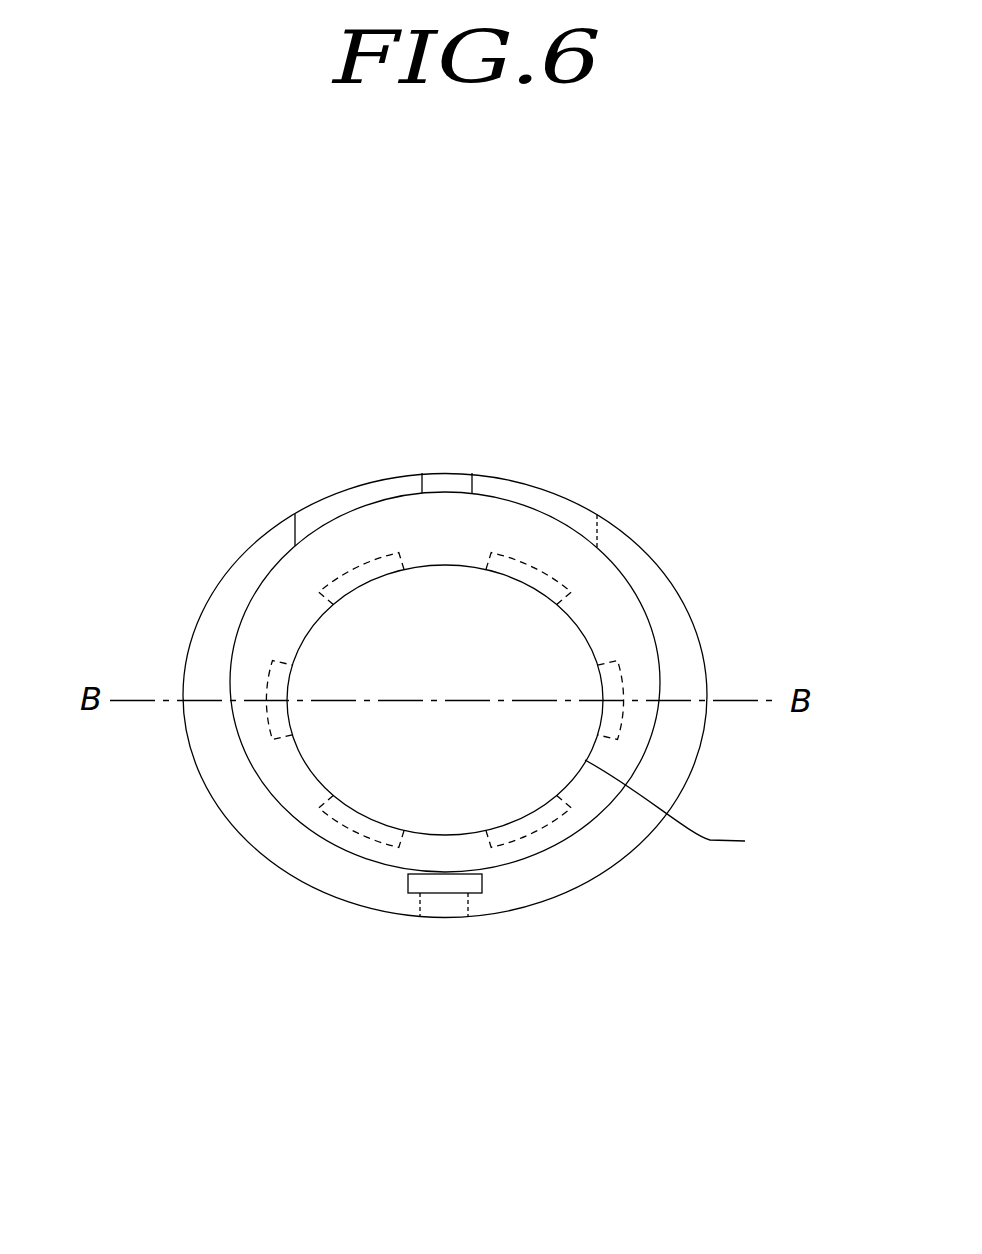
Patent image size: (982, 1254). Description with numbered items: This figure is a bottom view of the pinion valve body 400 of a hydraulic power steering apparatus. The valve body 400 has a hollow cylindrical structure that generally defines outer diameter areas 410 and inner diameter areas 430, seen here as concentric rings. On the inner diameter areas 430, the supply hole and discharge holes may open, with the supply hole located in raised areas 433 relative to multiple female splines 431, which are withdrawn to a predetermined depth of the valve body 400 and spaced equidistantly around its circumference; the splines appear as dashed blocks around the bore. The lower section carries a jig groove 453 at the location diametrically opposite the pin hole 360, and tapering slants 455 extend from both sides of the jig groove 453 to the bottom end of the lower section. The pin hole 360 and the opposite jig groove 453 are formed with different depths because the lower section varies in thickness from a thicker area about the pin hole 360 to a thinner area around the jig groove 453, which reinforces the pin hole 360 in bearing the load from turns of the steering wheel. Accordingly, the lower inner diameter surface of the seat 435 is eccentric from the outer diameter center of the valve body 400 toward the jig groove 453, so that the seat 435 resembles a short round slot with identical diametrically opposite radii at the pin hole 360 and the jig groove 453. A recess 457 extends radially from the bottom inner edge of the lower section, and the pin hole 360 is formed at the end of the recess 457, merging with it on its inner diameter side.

The pin hole 360 is at (433, 913).
The pinion valve body 400 is at (277, 422).
The outer diameter areas 410 is at (698, 643).
The inner diameter areas 430 is at (723, 397).
The female splines 431 is at (540, 563).
The raised areas 433 is at (583, 630).
The seat 435 is at (287, 782).
The jig groove 453 is at (445, 483).
The tapering slants 455 is at (530, 495).
The recess 457 is at (408, 883).